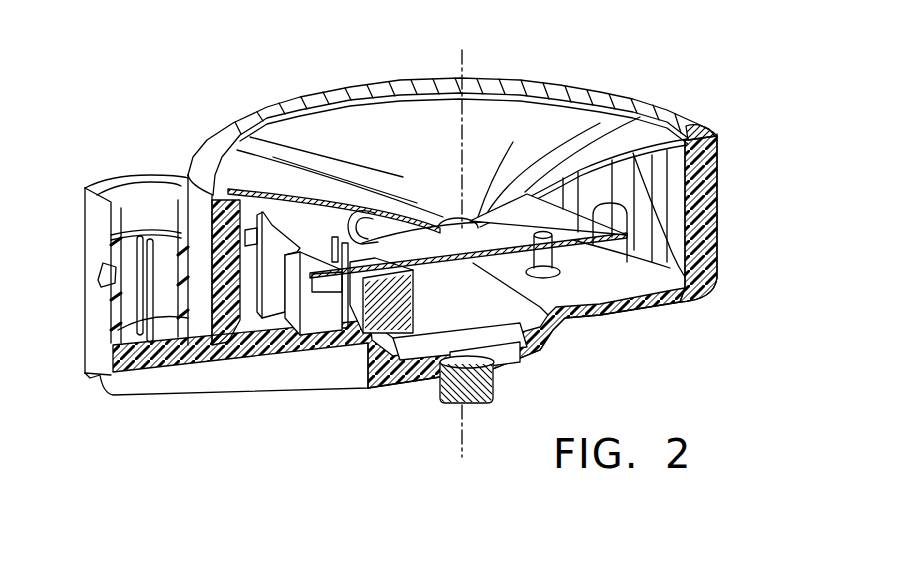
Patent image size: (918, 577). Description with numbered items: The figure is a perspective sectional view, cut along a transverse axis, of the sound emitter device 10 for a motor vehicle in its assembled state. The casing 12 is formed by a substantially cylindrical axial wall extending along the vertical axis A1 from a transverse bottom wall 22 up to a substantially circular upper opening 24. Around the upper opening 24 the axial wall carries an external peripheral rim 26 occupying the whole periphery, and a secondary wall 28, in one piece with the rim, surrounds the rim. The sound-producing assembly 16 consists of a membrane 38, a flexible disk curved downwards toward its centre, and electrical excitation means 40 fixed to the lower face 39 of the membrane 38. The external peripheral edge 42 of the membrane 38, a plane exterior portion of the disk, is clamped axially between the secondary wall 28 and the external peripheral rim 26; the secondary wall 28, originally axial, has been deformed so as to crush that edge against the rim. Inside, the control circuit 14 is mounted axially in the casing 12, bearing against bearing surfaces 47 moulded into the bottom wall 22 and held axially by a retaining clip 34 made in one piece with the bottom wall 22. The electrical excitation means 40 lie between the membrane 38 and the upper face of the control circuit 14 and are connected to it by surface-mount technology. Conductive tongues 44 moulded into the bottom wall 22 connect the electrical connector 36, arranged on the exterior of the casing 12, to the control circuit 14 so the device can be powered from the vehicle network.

The sound emitter device 10 is at (764, 127).
The casing 12 is at (764, 215).
The control circuit 14 is at (600, 213).
The sound-producing assembly 16 is at (523, 108).
The bottom wall 22 is at (193, 363).
The upper opening 24 is at (675, 180).
The external peripheral rim 26 is at (700, 147).
The secondary wall 28 is at (205, 143).
The retaining clip 34 is at (248, 222).
The electrical connector 36 is at (97, 231).
The membrane 38 is at (565, 117).
The lower face 39 is at (664, 150).
The electrical excitation means 40 is at (380, 232).
The external peripheral edge 42 is at (712, 130).
The conductive tongues 44 is at (157, 352).
The bearing surfaces 47 is at (554, 262).
The vertical axis A1 is at (461, 241).